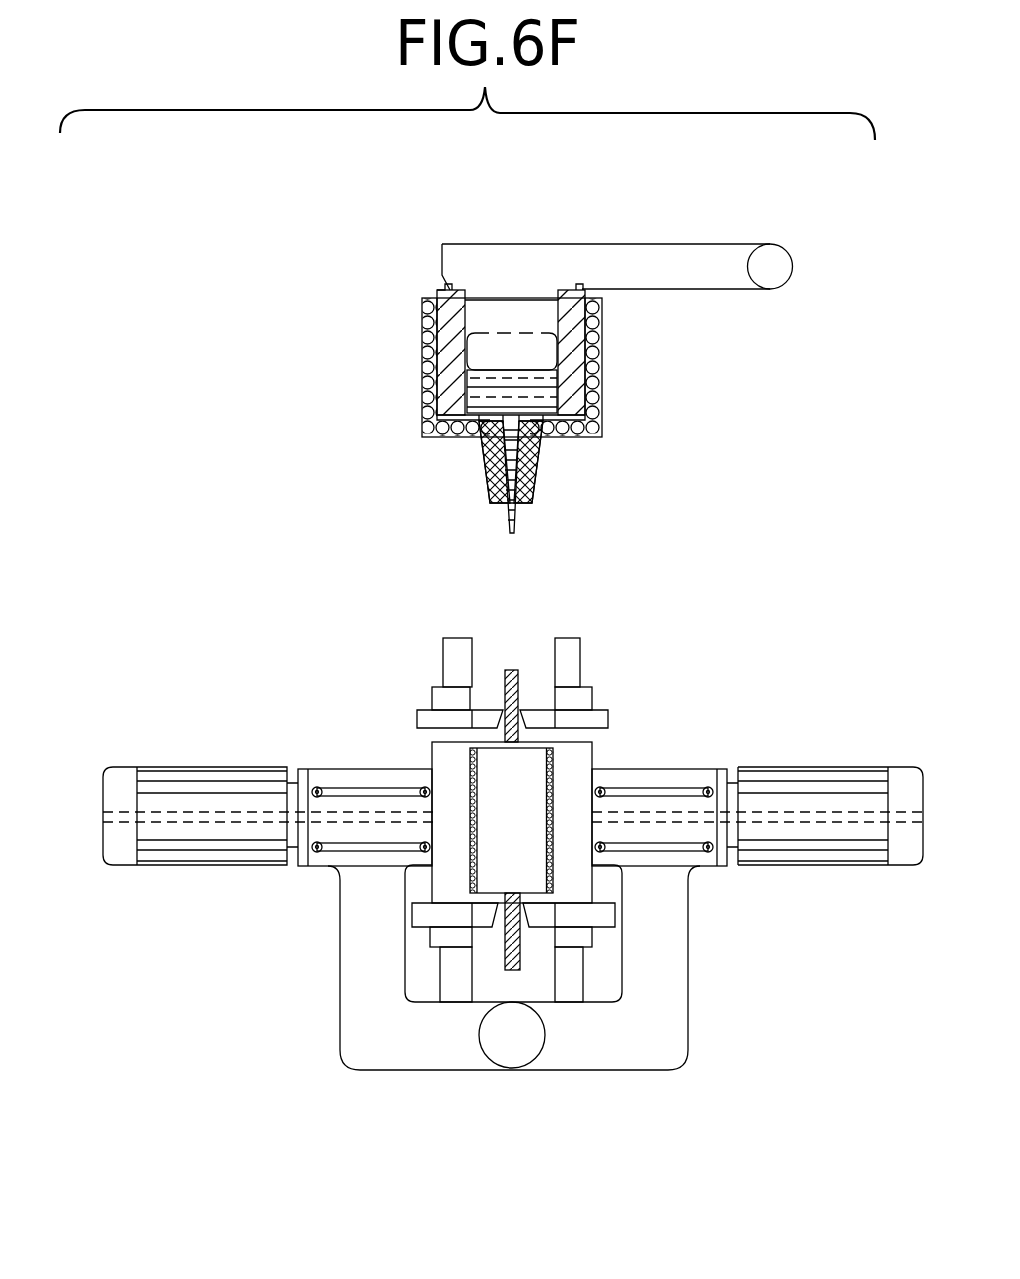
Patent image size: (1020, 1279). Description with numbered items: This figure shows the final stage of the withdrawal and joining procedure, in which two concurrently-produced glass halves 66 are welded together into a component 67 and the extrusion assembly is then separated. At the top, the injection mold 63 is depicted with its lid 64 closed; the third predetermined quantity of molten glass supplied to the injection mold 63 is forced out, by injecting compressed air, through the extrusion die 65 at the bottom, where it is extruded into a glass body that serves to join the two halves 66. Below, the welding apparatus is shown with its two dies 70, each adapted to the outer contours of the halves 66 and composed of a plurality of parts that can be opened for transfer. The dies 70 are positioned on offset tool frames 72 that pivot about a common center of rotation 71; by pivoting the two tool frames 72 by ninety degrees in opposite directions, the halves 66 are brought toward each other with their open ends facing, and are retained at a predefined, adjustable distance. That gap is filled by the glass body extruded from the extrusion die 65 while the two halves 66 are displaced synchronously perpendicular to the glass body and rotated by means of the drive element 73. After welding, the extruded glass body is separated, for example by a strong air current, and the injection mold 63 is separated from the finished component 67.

The injection mold 63 is at (577, 395).
The lid 64 is at (683, 277).
The extrusion die 65 is at (510, 525).
The halves 66 is at (470, 771).
The component 67 is at (458, 883).
The dies 70 is at (402, 708).
The center of rotation 71 is at (513, 1040).
The tool frames 72 is at (373, 995).
The drive element 73 is at (510, 670).